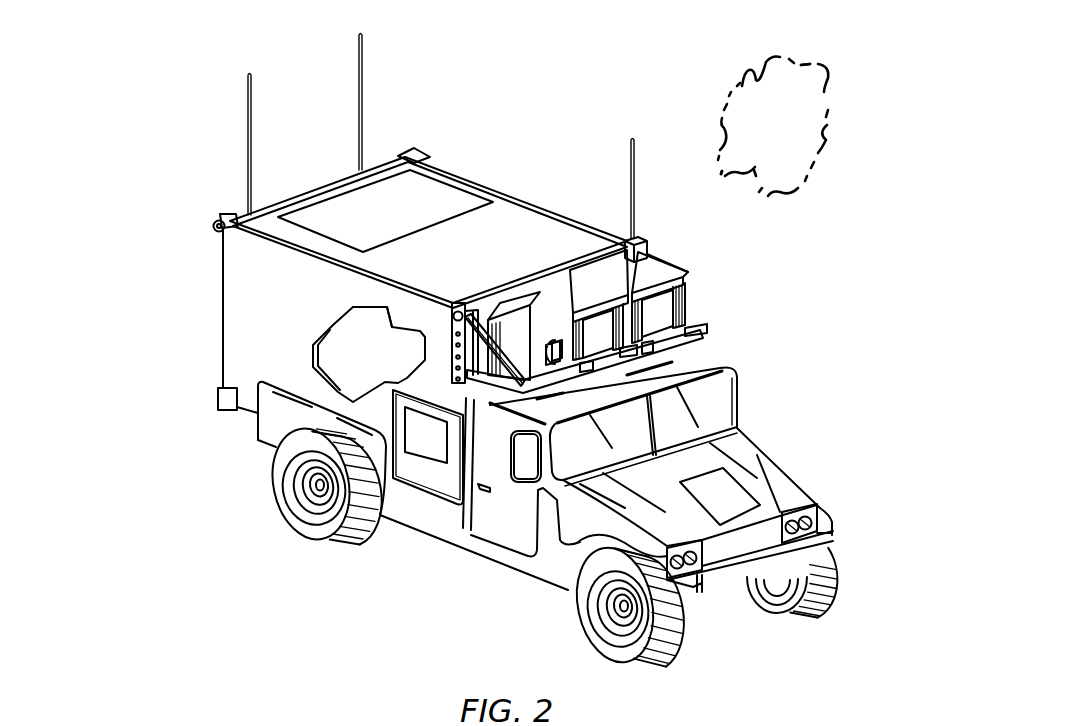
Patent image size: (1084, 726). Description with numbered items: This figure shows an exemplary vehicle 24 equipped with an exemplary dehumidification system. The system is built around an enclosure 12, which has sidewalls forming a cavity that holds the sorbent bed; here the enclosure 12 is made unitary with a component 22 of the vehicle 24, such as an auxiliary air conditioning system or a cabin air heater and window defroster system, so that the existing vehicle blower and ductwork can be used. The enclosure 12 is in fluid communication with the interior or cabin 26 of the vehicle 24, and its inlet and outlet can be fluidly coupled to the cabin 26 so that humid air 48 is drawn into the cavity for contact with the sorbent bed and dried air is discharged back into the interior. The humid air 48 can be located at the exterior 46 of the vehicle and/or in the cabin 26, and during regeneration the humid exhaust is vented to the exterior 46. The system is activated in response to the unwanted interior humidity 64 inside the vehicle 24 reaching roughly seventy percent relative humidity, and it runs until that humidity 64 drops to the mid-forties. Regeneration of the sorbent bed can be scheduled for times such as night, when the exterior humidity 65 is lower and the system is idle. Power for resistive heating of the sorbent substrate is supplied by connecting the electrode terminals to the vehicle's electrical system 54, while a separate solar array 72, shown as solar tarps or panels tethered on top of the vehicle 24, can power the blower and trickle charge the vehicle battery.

The vehicle 24 is at (186, 193).
The enclosure 12 is at (518, 320).
The component 22 is at (565, 337).
The vehicle's electrical system 54 is at (527, 360).
The solar array 72 is at (402, 221).
The cabin 26 is at (381, 359).
The interior humidity 64 is at (333, 325).
The exterior 46 is at (160, 426).
The humid air 48 is at (788, 144).
The exterior humidity 65 is at (826, 95).